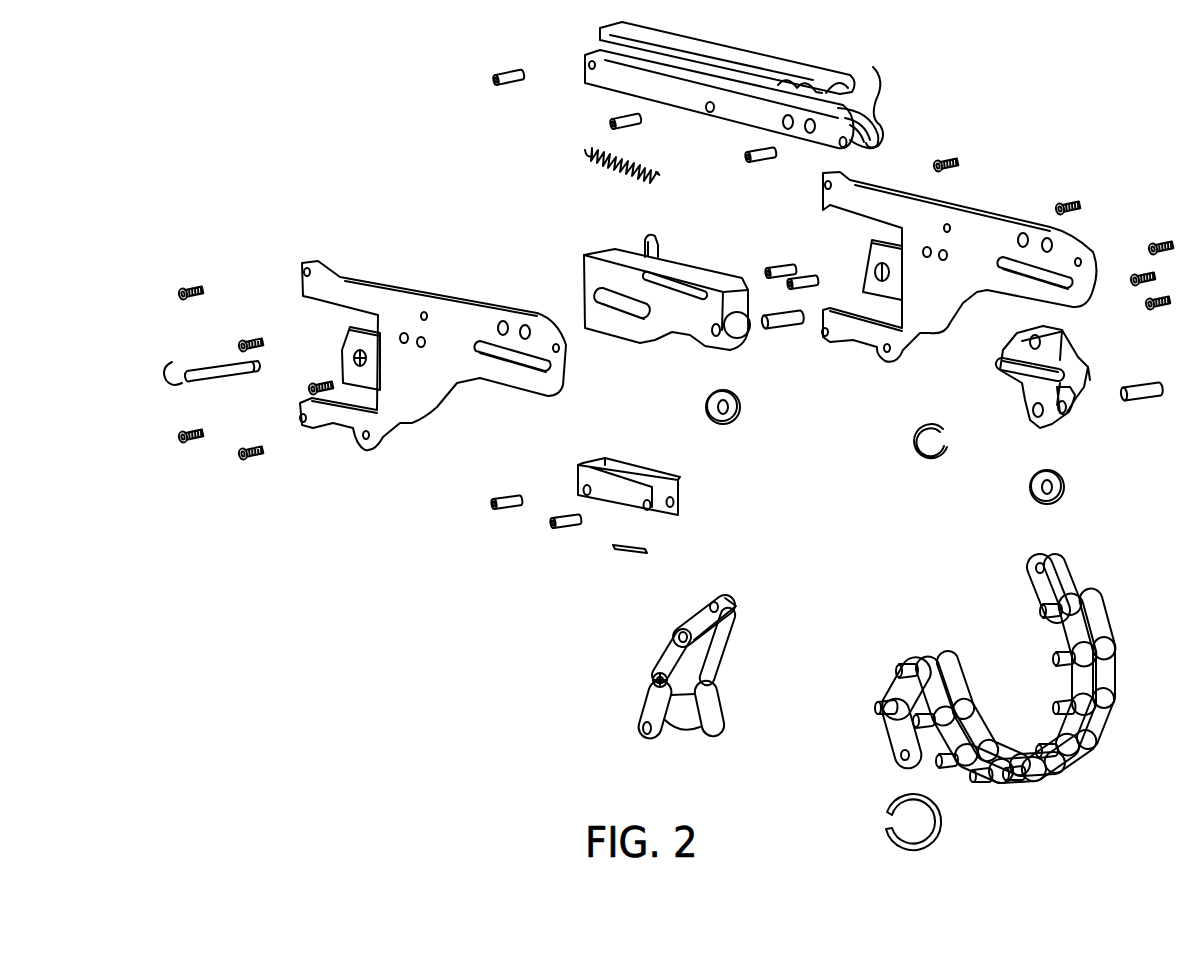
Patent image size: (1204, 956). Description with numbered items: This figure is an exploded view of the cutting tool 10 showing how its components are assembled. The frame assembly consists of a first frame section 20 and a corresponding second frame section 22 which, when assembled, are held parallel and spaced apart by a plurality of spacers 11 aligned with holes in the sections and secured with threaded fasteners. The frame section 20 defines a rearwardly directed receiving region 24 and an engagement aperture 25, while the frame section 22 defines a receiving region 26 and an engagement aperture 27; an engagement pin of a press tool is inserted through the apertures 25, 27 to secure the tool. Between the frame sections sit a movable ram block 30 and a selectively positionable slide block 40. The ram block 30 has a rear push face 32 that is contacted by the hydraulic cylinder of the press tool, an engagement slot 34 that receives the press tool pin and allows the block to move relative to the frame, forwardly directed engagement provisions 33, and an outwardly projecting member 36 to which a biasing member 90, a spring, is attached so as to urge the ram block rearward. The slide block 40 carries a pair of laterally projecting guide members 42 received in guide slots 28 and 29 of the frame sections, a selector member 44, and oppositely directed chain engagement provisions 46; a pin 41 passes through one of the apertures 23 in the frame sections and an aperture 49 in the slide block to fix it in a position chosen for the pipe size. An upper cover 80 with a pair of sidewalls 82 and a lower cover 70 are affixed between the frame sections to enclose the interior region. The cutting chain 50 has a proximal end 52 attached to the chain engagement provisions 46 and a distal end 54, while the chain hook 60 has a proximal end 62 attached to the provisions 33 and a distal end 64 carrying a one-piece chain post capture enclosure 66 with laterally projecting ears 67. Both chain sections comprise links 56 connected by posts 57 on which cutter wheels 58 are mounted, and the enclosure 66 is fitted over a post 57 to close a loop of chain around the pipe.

The cutting tool 10 is at (364, 88).
The spacers 11 is at (506, 88).
The first frame section 20 is at (420, 377).
The second frame section 22 is at (990, 235).
The apertures 23 is at (525, 325).
The receiving region 24 is at (297, 316).
The engagement aperture 25 is at (352, 357).
The receiving region 26 is at (797, 242).
The engagement aperture 27 is at (868, 270).
The guide slot 28 is at (520, 368).
The guide slot 29 is at (1090, 300).
The ram block 30 is at (653, 294).
The rear push face 32 is at (583, 262).
The engagement provisions 33 is at (743, 345).
The engagement slot 34 is at (632, 306).
The outwardly projecting member 36 is at (660, 238).
The slide block 40 is at (1042, 371).
The pin 41 is at (213, 368).
The guide members 42 is at (1088, 365).
The selector member 44 is at (1050, 327).
The chain engagement provisions 46 is at (1032, 412).
The aperture 49 is at (1028, 343).
The cutting chain 50 is at (994, 692).
The proximal end 52 is at (1076, 570).
The distal end 54 is at (912, 660).
The links 56 is at (1062, 727).
The posts 57 is at (1050, 657).
The cutter wheels 58 is at (1045, 790).
The chain hook 60 is at (652, 677).
The proximal end 62 is at (745, 612).
The distal end 64 is at (708, 682).
The chain post capture enclosure 66 is at (715, 740).
The laterally projecting ears 67 is at (637, 733).
The lower cover 70 is at (690, 490).
The upper cover 80 is at (873, 67).
The sidewalls 82 is at (688, 100).
The biasing member 90 is at (588, 156).